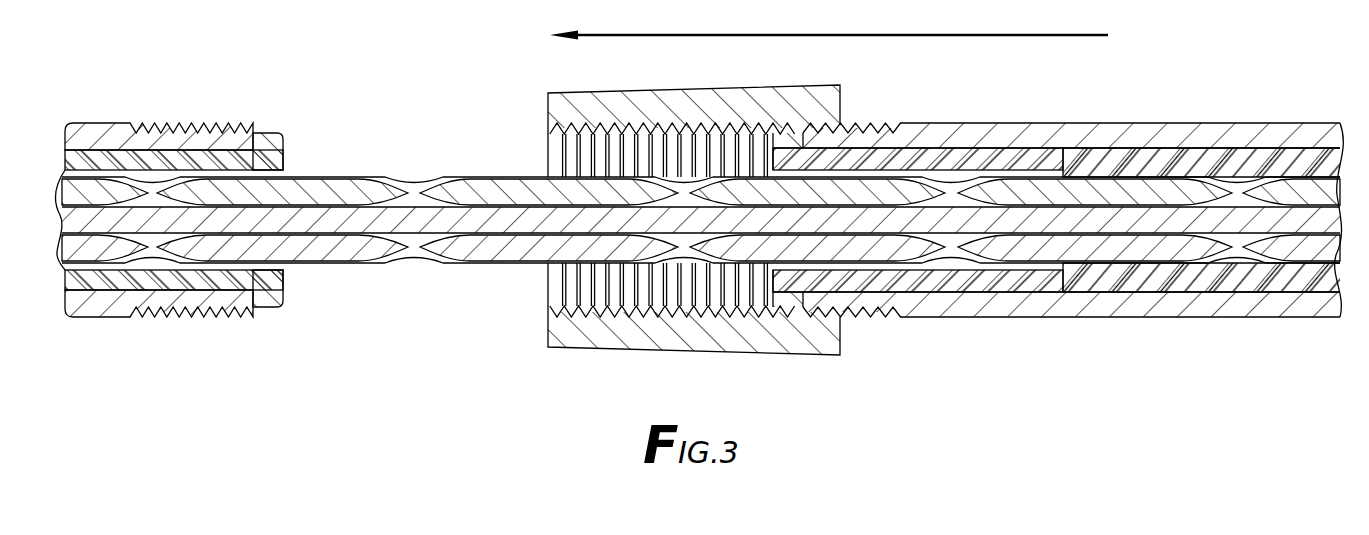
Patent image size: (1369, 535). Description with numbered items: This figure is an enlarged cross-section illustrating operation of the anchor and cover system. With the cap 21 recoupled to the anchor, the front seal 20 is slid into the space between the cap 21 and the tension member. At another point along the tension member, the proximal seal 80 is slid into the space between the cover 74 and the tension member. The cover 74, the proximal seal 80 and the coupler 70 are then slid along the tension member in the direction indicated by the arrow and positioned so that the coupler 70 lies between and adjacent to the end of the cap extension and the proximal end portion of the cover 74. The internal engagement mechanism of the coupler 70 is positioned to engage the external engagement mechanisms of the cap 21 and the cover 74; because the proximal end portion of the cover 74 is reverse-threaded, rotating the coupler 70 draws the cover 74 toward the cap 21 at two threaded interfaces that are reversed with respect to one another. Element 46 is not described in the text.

The cap 21 is at (108, 122).
The front seal 20 is at (285, 152).
The coupler 70 is at (607, 350).
The cover 74 is at (1143, 123).
The proximal seal 80 is at (885, 160).
The liner layer 46 is at (1205, 160).